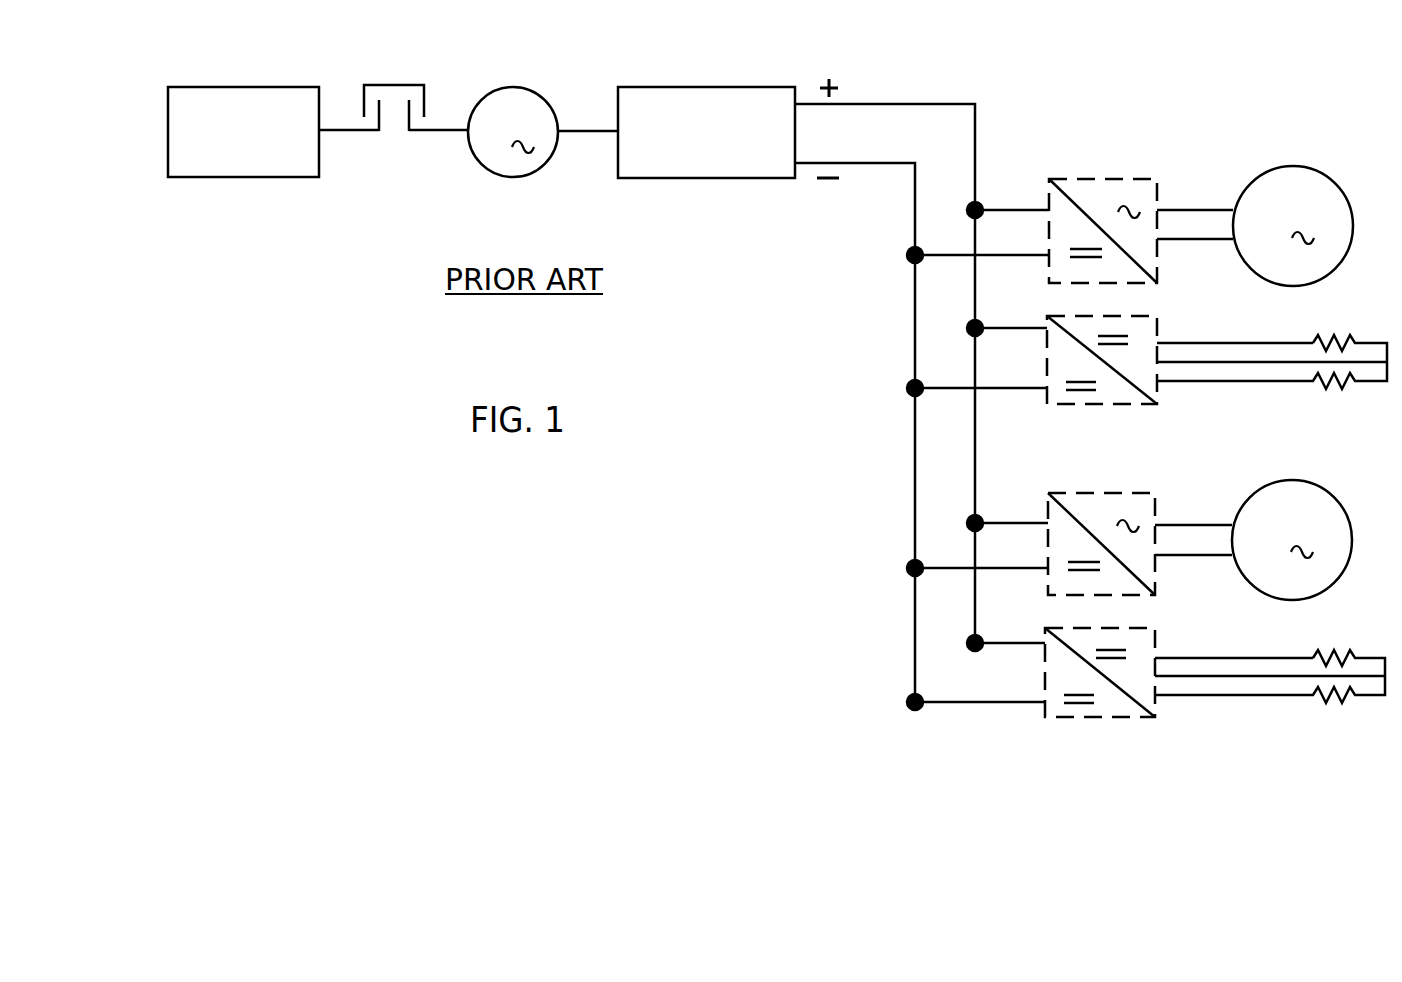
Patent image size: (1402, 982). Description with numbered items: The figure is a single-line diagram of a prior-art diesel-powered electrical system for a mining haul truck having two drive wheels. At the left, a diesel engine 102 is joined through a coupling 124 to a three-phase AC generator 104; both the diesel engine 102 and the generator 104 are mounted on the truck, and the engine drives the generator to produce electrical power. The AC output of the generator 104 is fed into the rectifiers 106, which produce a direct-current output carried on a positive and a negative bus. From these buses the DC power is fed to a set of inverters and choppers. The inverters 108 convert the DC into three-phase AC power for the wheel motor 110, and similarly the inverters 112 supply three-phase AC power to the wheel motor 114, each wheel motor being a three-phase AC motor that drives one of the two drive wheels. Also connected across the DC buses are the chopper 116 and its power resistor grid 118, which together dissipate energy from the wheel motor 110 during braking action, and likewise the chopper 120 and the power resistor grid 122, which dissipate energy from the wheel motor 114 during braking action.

The diesel engine 102 is at (245, 85).
The coupling 124 is at (393, 85).
The generator 104 is at (512, 87).
The rectifiers 106 is at (708, 87).
The inverters 108 is at (1102, 178).
The wheel motor 110 is at (1295, 164).
The inverters 112 is at (1103, 490).
The wheel motor 114 is at (1293, 478).
The chopper 116 is at (1158, 333).
The power resistor grid 118 is at (1338, 331).
The chopper 120 is at (1156, 651).
The power resistor grid 122 is at (1337, 644).